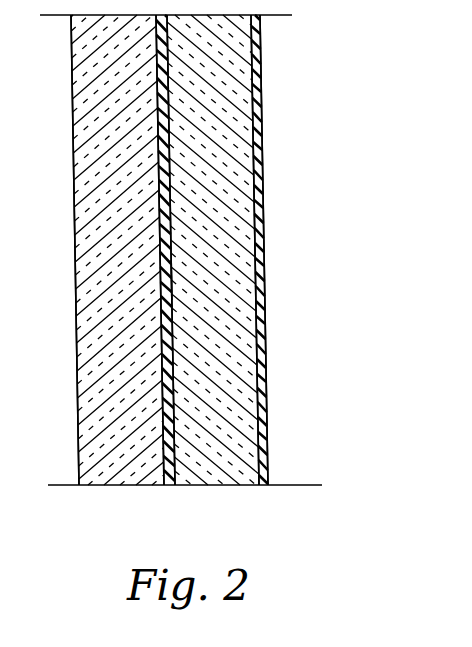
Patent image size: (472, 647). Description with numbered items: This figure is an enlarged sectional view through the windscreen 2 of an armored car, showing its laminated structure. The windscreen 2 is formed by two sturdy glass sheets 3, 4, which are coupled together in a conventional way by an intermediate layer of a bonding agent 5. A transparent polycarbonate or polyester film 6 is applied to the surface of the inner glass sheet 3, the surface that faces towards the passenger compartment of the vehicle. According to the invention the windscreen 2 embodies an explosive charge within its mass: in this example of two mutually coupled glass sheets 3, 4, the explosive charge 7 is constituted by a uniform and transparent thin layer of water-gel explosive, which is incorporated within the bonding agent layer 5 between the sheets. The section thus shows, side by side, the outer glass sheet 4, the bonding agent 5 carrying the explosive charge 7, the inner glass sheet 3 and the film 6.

The windscreen 2 is at (317, 225).
The inner glass sheet 3 is at (222, 368).
The glass sheet 4 is at (102, 327).
The bonding agent layer 5 is at (169, 486).
The transparent film 6 is at (262, 86).
The explosive charge 7 is at (165, 283).